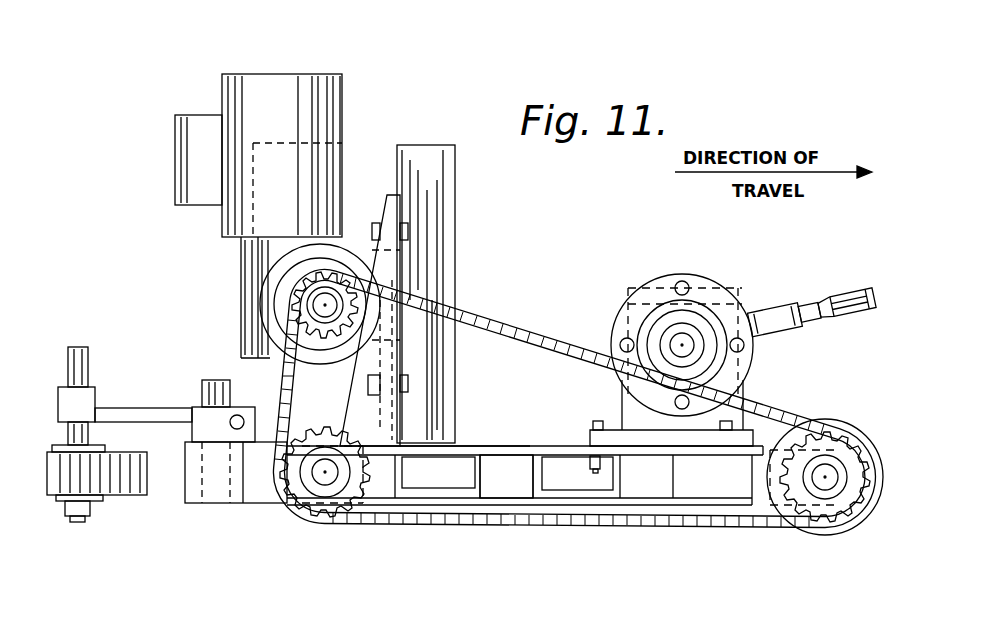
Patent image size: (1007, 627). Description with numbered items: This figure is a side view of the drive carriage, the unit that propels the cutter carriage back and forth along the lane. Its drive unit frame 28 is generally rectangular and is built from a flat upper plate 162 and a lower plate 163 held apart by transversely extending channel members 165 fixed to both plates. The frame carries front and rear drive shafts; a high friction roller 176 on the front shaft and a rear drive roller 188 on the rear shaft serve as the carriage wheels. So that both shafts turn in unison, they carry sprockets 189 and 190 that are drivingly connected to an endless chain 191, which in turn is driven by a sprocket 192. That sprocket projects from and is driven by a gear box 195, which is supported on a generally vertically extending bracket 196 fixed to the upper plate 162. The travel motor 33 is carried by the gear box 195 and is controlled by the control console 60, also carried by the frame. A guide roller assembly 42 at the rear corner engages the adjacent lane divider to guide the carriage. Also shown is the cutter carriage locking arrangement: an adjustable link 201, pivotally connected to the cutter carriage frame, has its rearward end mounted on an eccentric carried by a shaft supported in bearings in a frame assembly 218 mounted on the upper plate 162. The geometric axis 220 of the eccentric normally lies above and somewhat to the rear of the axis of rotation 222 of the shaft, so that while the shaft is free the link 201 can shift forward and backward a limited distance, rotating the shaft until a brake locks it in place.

The travel motor 33 is at (250, 84).
The control console 60 is at (432, 180).
The gear box 195 is at (298, 272).
The sprocket 192 is at (304, 305).
The bracket 196 is at (397, 266).
The endless chain 191 is at (504, 318).
The rear drive roller 188 is at (313, 522).
The sprocket 189 is at (297, 494).
The guide roller assembly 42 is at (108, 522).
The drive unit frame 28 is at (532, 442).
The upper plate 162 is at (476, 445).
The channel members 165 is at (425, 490).
The lower plate 163 is at (520, 497).
The axis of rotation 222 is at (662, 372).
The frame assembly 218 is at (739, 286).
The geometric axis 220 is at (682, 345).
The adjustable link 201 is at (858, 292).
The high friction roller 176 is at (833, 458).
The sprocket 190 is at (831, 502).